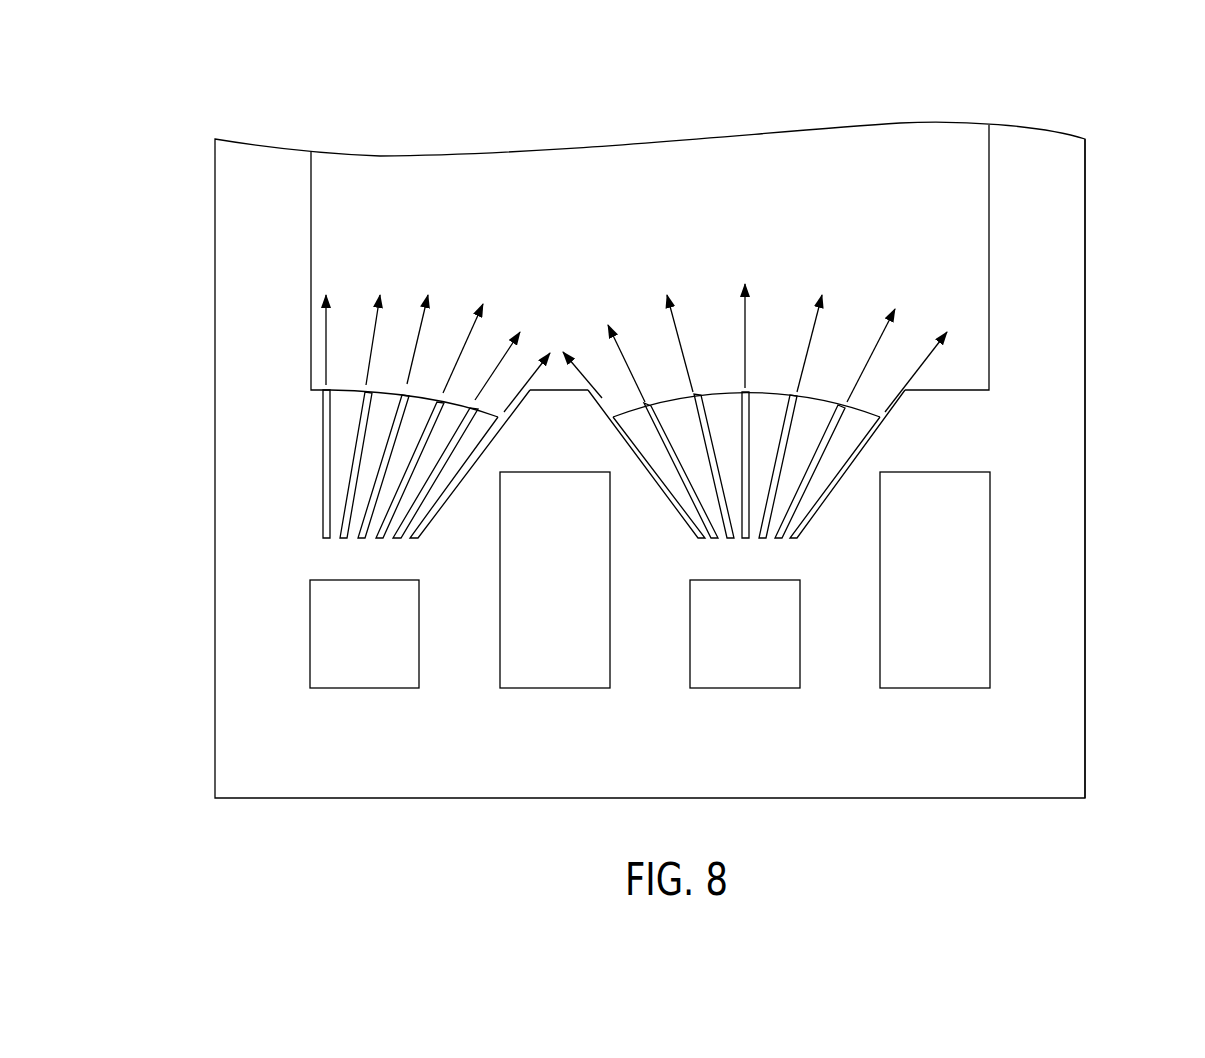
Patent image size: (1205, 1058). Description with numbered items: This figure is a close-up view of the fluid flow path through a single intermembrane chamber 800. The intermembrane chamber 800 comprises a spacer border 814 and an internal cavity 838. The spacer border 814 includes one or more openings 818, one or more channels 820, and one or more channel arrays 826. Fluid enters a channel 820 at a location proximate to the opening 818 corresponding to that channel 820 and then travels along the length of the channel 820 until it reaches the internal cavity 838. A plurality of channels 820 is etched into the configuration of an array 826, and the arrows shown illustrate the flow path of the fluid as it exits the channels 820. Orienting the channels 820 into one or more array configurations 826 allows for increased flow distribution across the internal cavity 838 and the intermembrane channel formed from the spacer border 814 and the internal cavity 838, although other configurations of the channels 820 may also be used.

The intermembrane chamber 800 is at (185, 130).
The spacer border 814 is at (1070, 313).
The internal cavity 838 is at (948, 153).
The channel array 826 is at (754, 435).
The channel 820 is at (813, 515).
The opening 818 is at (787, 690).